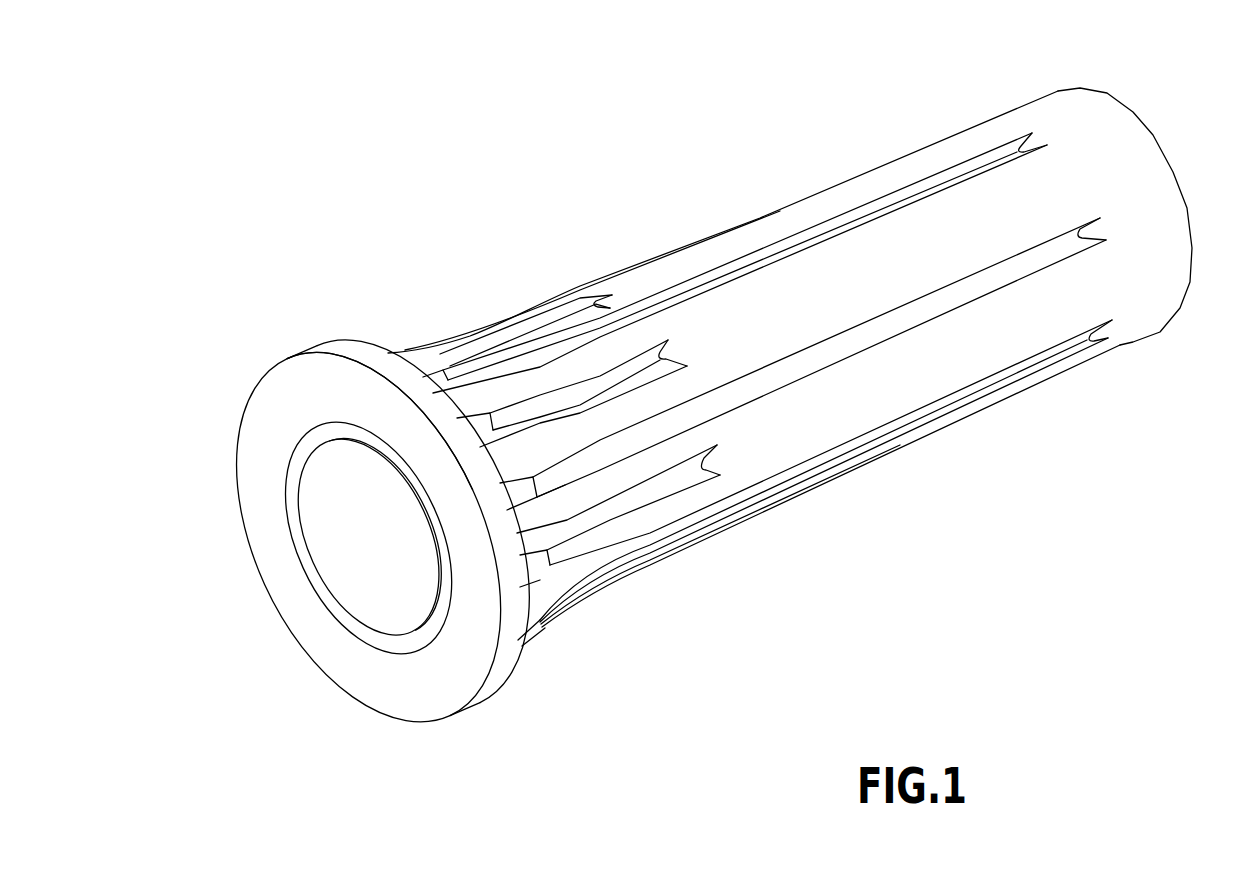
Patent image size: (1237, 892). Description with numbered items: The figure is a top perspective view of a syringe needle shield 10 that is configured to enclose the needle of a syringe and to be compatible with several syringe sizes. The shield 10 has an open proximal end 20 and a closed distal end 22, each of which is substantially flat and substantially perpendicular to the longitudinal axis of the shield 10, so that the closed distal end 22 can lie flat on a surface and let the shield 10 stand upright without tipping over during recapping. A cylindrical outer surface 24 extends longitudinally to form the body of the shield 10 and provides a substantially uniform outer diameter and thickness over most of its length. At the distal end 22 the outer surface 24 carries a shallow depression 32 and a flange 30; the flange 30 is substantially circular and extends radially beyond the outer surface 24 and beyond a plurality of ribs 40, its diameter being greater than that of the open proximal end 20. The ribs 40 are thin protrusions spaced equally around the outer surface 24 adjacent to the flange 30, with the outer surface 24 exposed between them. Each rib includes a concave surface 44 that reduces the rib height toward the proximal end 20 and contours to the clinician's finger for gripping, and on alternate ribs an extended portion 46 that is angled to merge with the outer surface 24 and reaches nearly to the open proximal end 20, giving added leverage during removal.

The syringe needle shield 10 is at (528, 168).
The open proximal end 20 is at (809, 345).
The closed distal end 22 is at (237, 492).
The cylindrical outer surface 24 is at (1077, 138).
The flange 30 is at (344, 346).
The shallow depression 32 is at (300, 465).
The ribs 40 is at (483, 370).
The concave surface 44 is at (538, 636).
The extended portion 46 is at (722, 270).